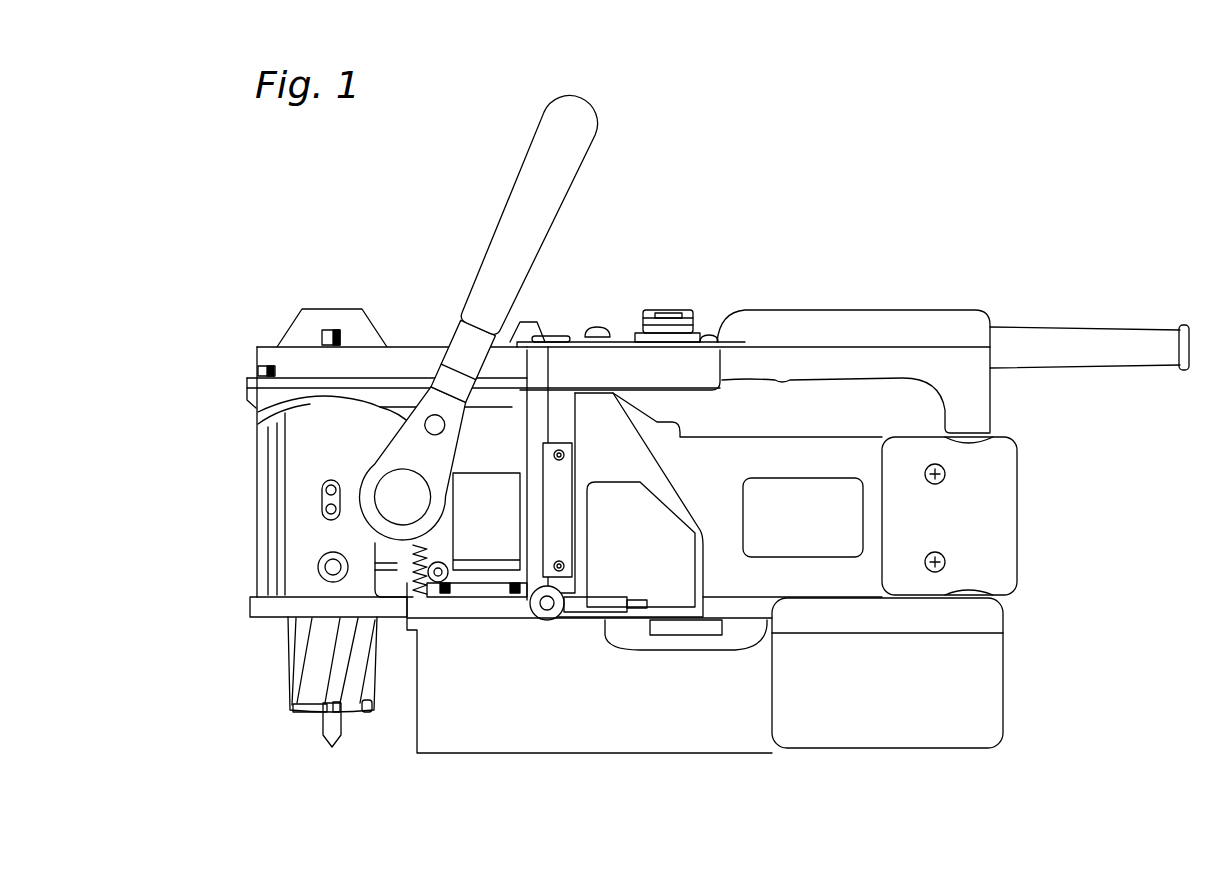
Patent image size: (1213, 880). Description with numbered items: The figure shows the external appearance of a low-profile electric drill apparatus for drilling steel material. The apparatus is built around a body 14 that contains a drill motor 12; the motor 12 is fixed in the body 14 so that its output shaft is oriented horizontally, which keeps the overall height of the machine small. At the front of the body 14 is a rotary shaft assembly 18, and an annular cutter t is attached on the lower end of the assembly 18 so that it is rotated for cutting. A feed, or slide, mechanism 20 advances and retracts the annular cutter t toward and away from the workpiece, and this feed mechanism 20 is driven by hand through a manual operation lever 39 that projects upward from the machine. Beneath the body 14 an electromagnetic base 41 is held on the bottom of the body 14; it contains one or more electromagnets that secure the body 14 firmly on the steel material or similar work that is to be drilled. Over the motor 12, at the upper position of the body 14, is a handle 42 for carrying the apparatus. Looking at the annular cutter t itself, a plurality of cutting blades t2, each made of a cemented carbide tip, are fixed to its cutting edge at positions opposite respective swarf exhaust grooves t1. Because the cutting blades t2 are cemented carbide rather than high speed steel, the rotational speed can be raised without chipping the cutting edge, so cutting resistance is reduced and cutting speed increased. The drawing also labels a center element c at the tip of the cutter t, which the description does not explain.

The drill motor 12 is at (797, 463).
The body 14 is at (627, 443).
The rotary shaft assembly 18 is at (300, 447).
The feed mechanism 20 is at (402, 583).
The manual operation lever 39 is at (548, 183).
The electromagnetic base 41 is at (555, 717).
The handle 42 is at (785, 325).
The annular cutter t is at (318, 648).
The swarf exhaust grooves t1 is at (335, 687).
The cutting blades t2 is at (367, 713).
The center pilot pin c is at (332, 743).